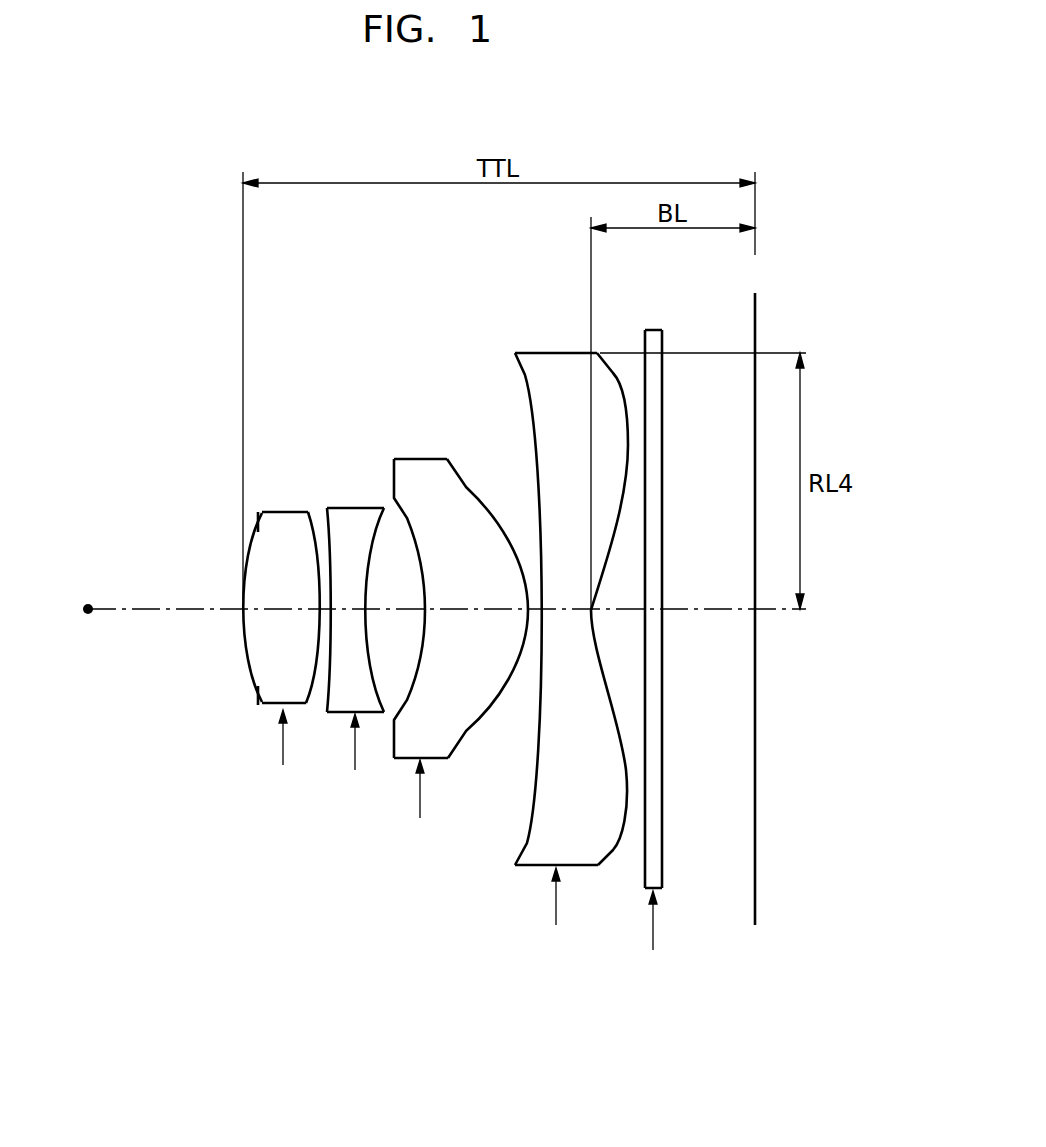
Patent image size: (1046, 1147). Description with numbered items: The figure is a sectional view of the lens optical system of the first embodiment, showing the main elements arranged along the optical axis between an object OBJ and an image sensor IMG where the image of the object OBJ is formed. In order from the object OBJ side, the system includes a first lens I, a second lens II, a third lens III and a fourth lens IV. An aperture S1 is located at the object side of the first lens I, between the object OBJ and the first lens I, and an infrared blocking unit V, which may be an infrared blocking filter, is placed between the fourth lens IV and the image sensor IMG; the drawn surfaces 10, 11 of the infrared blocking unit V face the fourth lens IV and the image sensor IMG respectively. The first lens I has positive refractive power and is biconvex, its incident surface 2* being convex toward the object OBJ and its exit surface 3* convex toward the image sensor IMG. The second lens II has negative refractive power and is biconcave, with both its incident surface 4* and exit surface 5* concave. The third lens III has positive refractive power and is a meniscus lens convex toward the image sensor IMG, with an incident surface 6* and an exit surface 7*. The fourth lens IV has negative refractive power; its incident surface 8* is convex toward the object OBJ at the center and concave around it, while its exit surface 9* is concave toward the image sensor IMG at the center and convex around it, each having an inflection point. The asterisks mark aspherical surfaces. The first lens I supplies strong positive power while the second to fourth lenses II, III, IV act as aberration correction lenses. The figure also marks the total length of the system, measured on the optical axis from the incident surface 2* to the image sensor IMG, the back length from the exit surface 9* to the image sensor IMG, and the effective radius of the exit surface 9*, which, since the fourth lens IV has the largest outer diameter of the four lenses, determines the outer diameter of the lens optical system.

The incident surface of the first lens 2 is at (270, 528).
The exit surface of the first lens 3 is at (313, 538).
The incident surface of the second lens 4 is at (338, 530).
The exit surface of the second lens 5 is at (376, 528).
The incident surface of the third lens 6 is at (408, 520).
The exit surface of the third lens 7 is at (468, 490).
The incident surface of the fourth lens 8 is at (527, 383).
The exit surface of the fourth lens 9 is at (613, 380).
The object-side surface of optical filter 10 is at (645, 342).
The image-side surface of optical filter 11 is at (663, 342).
The aperture S1 is at (260, 520).
The object OBJ is at (88, 604).
The image sensor IMG is at (755, 327).
The first lens I is at (283, 754).
The second lens II is at (355, 757).
The third lens III is at (420, 805).
The fourth lens IV is at (555, 913).
The infrared blocking unit V is at (653, 935).